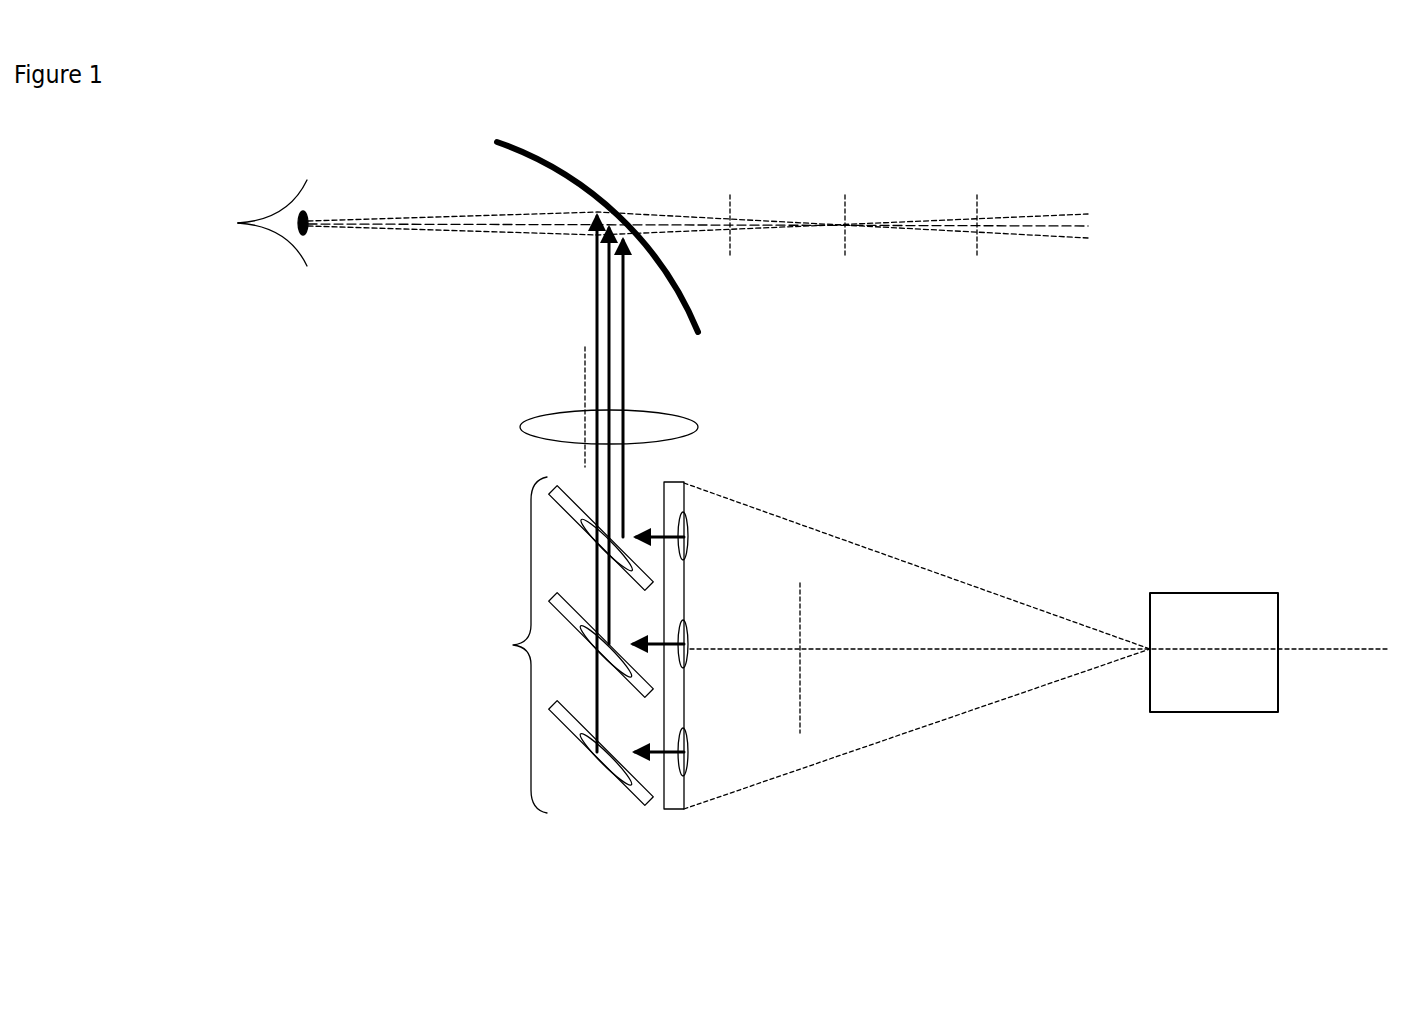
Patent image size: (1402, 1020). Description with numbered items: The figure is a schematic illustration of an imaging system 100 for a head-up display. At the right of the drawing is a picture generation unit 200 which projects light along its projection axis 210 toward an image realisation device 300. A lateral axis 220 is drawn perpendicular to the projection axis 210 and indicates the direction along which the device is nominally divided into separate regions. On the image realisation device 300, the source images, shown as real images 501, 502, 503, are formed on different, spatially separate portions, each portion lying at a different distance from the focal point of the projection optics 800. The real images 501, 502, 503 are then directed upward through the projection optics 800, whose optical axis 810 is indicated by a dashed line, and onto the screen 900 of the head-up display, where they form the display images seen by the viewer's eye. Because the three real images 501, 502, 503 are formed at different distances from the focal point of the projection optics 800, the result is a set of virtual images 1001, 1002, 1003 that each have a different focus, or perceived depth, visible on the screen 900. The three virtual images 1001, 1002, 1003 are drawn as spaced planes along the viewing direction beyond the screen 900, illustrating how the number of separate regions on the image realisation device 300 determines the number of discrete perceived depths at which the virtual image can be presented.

The imaging system 100 is at (1056, 385).
The picture generation unit 200 is at (1270, 625).
The projection axis 210 is at (848, 648).
The lateral axis 220 is at (802, 597).
The image realisation device 300 is at (556, 645).
The real image 501 is at (688, 537).
The real image 502 is at (688, 645).
The real image 503 is at (688, 752).
The projection optics 800 is at (690, 427).
The optical axis 810 is at (583, 388).
The screen 900 is at (530, 142).
The virtual image 1001 is at (733, 190).
The virtual image 1002 is at (847, 190).
The virtual image 1003 is at (979, 190).